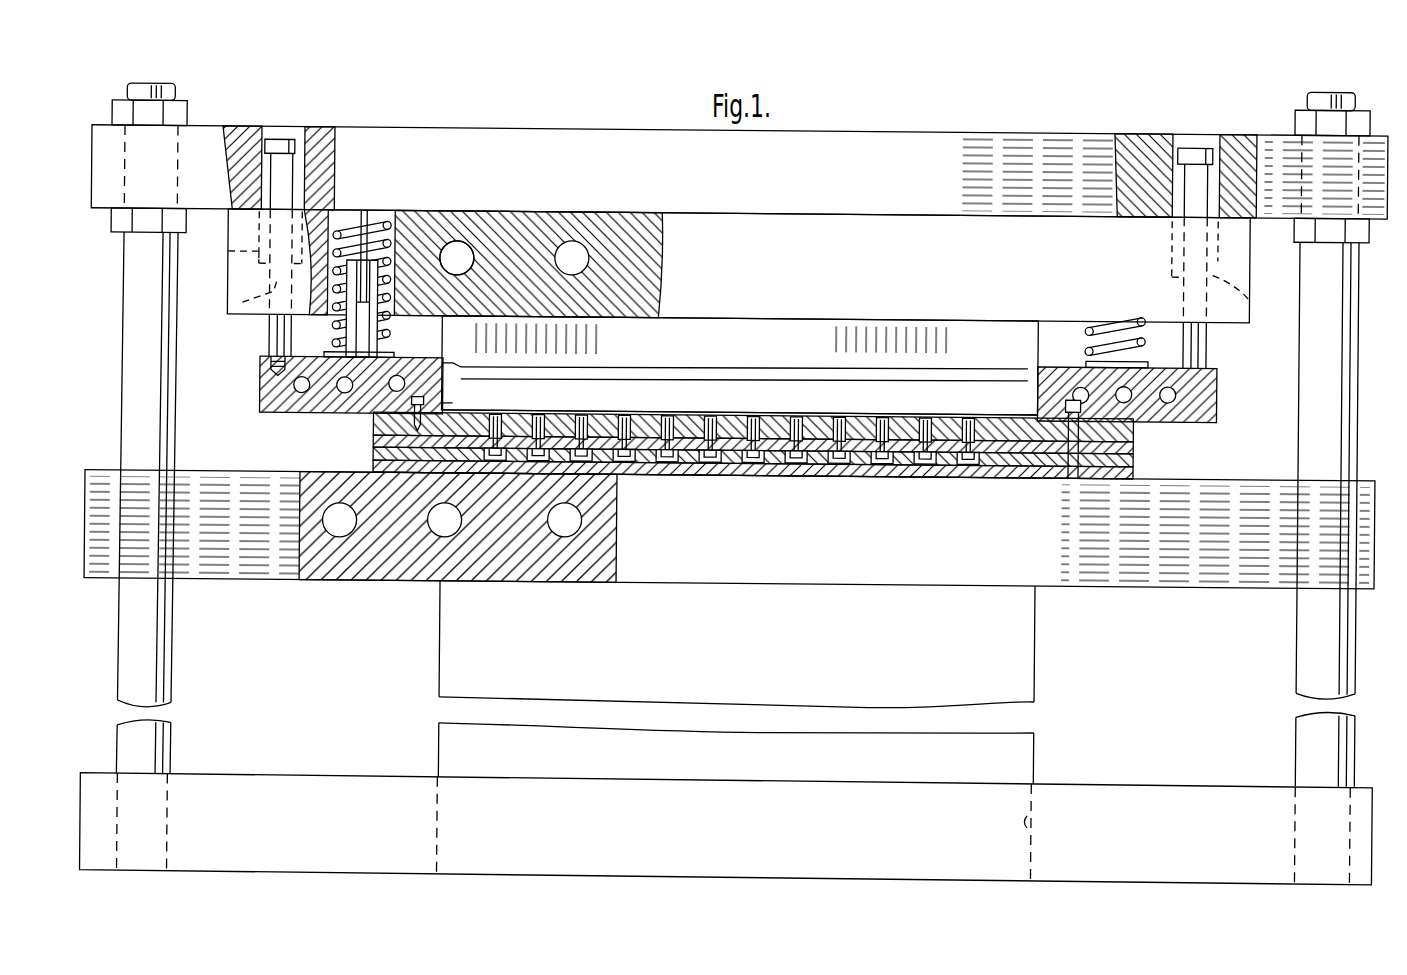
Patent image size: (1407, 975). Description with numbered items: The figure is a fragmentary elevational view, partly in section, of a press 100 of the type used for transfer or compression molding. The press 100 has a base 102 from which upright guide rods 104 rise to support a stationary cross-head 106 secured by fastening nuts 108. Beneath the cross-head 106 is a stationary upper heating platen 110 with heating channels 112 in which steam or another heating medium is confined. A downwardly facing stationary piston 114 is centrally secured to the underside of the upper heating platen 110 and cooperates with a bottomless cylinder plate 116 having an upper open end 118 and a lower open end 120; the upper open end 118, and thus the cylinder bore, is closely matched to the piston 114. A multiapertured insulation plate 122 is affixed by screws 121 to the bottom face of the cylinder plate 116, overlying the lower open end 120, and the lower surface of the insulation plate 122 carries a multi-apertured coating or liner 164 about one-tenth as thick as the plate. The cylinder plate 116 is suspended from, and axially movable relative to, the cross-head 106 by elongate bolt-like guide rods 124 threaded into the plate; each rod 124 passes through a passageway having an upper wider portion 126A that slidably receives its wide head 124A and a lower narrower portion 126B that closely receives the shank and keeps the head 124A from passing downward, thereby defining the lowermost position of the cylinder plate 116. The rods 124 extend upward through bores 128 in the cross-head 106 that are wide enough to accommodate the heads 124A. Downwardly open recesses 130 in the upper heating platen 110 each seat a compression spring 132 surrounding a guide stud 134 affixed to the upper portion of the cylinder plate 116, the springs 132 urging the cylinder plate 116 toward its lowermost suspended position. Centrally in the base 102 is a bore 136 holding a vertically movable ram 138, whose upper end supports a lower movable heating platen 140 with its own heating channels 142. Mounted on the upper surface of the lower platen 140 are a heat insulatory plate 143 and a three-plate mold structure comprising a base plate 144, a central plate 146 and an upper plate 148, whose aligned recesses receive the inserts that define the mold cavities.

The press 100 is at (255, 54).
The base 102 is at (290, 789).
The upright guide rods 104 is at (129, 362).
The stationary cross-head 106 is at (992, 142).
The fastening nuts 108 is at (182, 109).
The stationary upper heating platen 110 is at (841, 229).
The heating channels 112 is at (568, 239).
The stationary piston 114 is at (688, 357).
The bottomless cylinder plate 116 is at (261, 412).
The upper open end 118 is at (1040, 340).
The lower open end 120 is at (450, 407).
The screws 121 is at (1068, 474).
The insulation plate 122 is at (756, 454).
The guide rods 124 is at (266, 337).
The wide head 124A is at (287, 138).
The upper wider portion 126A is at (749, 266).
The lower narrower portion 126B is at (233, 316).
The bores 128 is at (299, 162).
The downwardly open recesses 130 is at (465, 244).
The compression spring 132 is at (384, 213).
The guide stud 134 is at (380, 346).
The bore 136 is at (1038, 814).
The ram 138 is at (442, 730).
The lower movable heating platen 140 is at (95, 470).
The heating channels 142 is at (442, 519).
The heat insulatory plate 143 is at (1107, 471).
The base plate 144 is at (1135, 458).
The central plate 146 is at (1135, 443).
The upper plate 148 is at (1135, 434).
The multi-apertured coating or liner 164 is at (1006, 415).